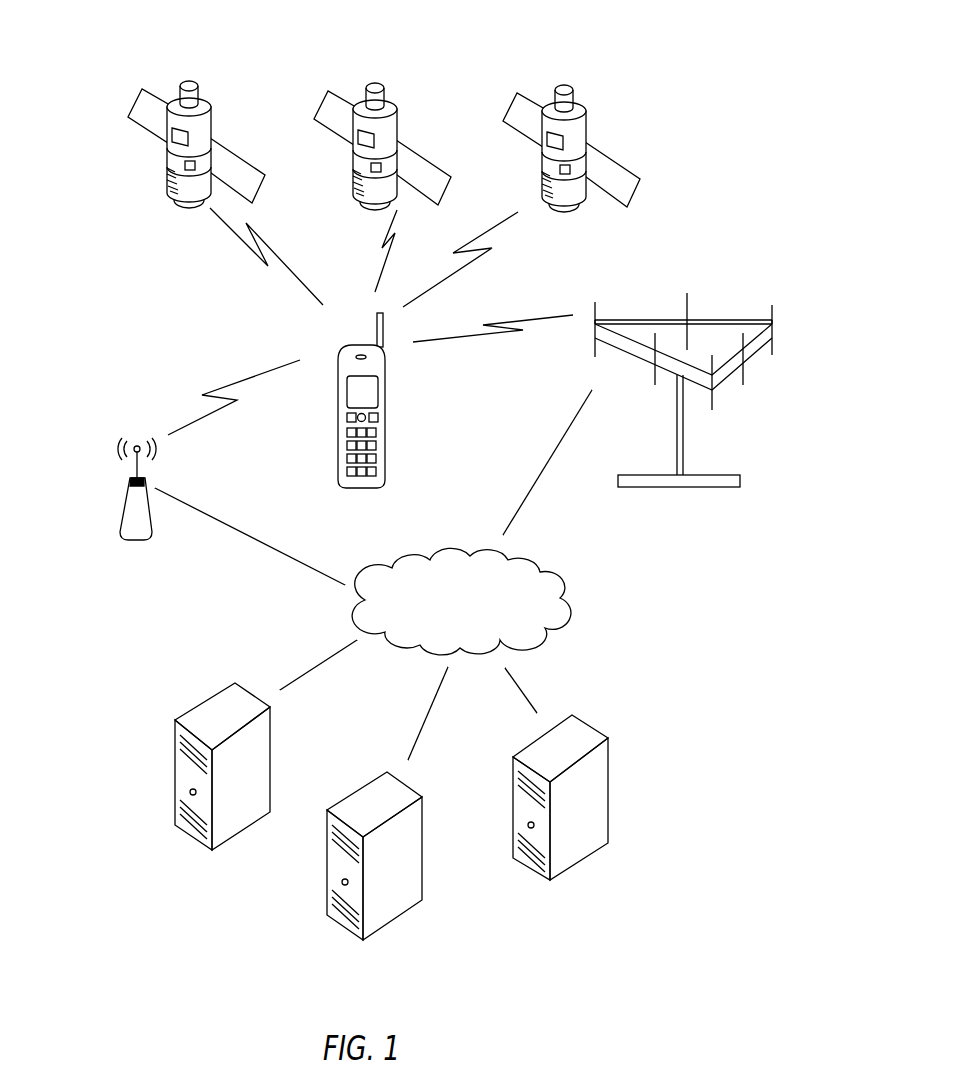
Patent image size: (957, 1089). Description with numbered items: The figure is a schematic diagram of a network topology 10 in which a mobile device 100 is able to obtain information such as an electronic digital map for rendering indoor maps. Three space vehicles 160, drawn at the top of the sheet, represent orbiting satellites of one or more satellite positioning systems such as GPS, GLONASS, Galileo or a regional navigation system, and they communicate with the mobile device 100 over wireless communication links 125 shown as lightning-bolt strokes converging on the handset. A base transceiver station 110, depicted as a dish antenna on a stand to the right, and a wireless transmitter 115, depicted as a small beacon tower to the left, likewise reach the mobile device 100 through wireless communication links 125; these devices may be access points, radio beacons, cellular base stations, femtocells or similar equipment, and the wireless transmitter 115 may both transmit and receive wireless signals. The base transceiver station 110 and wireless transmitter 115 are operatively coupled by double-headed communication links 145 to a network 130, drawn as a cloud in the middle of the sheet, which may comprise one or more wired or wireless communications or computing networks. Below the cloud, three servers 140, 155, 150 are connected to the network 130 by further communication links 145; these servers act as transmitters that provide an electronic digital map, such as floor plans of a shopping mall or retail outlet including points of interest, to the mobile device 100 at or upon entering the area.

The network topology 10 is at (134, 32).
The space vehicles 160 is at (92, 140).
The wireless communication links 125 is at (232, 250).
The mobile device 100 is at (393, 407).
The base transceiver station 110 is at (640, 322).
The wireless transmitter 115 is at (129, 545).
The communication links 145 is at (243, 537).
The network 130 is at (568, 592).
The server 140 is at (190, 710).
The server 155 is at (330, 803).
The server 150 is at (605, 735).